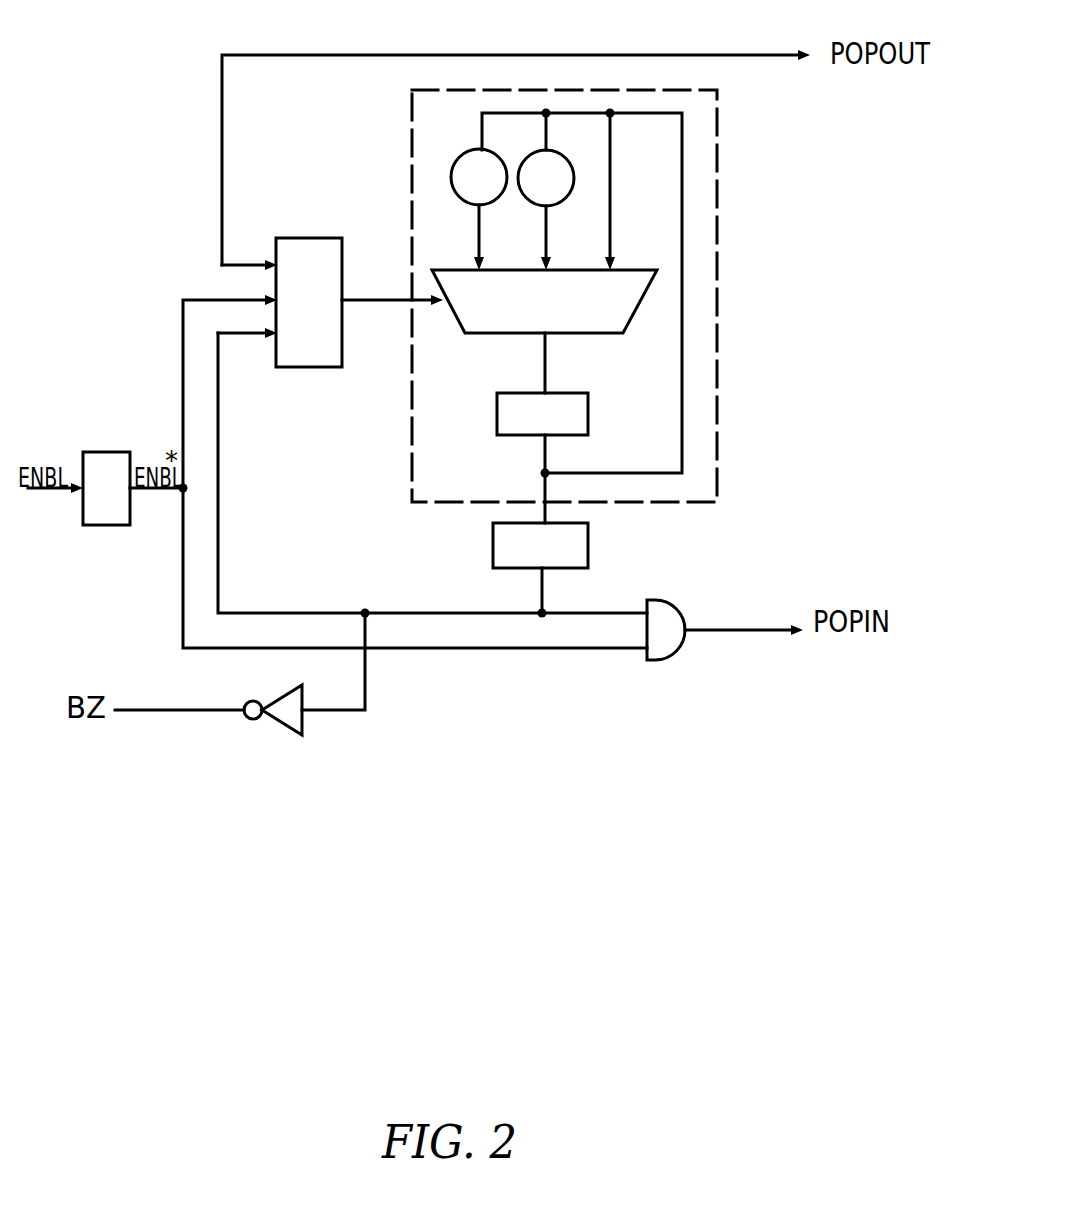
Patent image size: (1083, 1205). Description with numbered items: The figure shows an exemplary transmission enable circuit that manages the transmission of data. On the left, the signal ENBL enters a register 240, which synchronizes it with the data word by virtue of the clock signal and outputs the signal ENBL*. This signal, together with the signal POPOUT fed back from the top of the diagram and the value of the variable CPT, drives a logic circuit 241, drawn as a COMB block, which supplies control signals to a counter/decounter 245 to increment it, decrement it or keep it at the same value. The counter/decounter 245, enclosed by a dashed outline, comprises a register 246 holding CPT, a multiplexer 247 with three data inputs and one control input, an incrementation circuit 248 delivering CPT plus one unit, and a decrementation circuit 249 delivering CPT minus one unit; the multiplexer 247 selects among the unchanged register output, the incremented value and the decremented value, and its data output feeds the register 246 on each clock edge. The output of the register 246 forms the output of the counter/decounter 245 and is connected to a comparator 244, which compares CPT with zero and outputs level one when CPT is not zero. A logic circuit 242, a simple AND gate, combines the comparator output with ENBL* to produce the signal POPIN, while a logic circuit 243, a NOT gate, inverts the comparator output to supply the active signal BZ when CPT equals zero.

The register 240 is at (105, 452).
The logic circuit 241 is at (301, 238).
The logic circuit 242 is at (683, 645).
The logic circuit 243 is at (272, 717).
The comparator 244 is at (588, 540).
The counter/decounter 245 is at (717, 408).
The register 246 is at (497, 412).
The multiplexer 247 is at (640, 303).
The incrementation circuit 248 is at (457, 172).
The decrementation circuit 249 is at (562, 155).